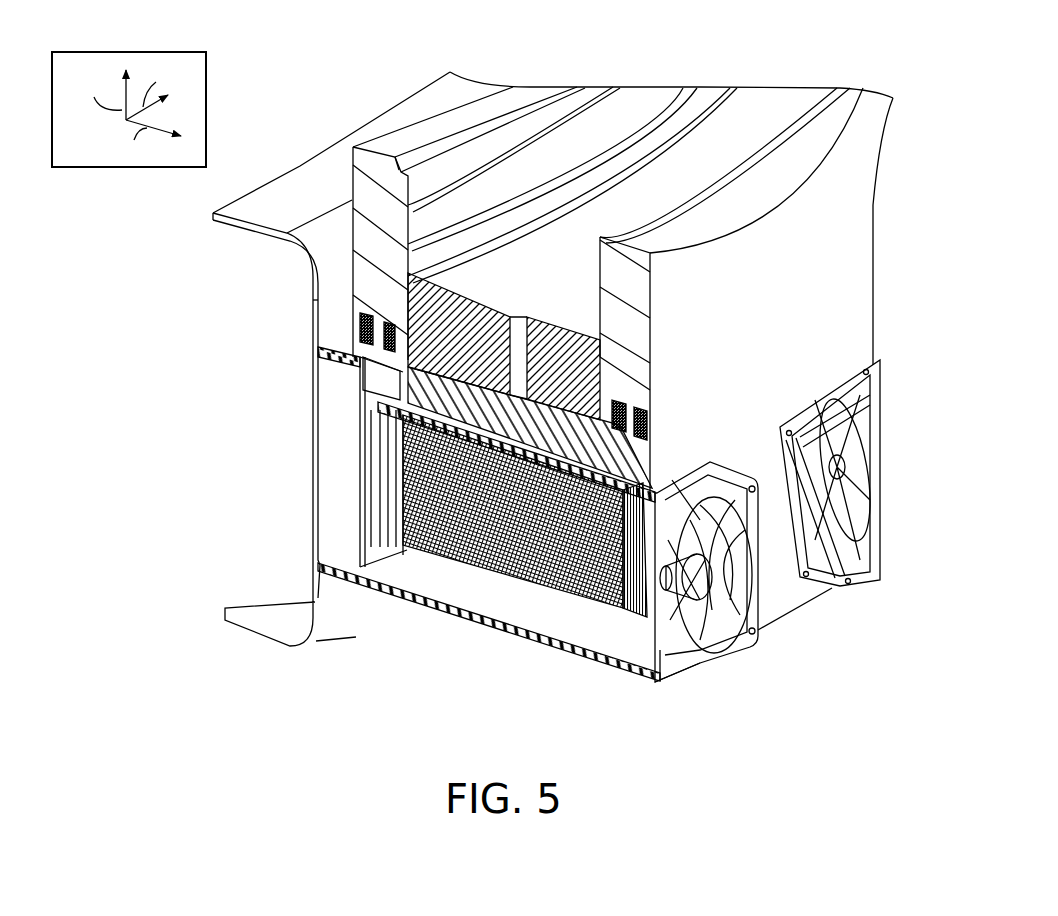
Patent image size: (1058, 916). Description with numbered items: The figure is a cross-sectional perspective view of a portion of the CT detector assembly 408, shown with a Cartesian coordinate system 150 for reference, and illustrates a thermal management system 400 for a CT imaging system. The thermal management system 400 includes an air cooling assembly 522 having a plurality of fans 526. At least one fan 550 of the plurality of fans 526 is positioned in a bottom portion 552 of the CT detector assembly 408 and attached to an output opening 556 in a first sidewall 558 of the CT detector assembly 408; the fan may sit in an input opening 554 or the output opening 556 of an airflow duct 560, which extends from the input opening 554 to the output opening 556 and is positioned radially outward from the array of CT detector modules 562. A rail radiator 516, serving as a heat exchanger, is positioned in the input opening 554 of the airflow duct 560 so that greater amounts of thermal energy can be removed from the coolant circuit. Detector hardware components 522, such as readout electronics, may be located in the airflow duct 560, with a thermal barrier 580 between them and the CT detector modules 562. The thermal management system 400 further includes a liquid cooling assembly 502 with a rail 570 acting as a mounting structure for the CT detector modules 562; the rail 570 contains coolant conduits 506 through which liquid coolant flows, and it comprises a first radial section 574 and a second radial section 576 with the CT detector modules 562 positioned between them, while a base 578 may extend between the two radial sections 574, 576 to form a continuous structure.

The Cartesian coordinate system 150 is at (107, 50).
The thermal management system 400 is at (168, 243).
The CT detector assembly 408 is at (848, 305).
The liquid cooling assembly 502 is at (272, 423).
The coolant conduits 506 is at (358, 332).
The rail radiator 516 is at (330, 487).
The air cooling assembly 522 is at (688, 579).
The plurality of fans 526 is at (735, 664).
The fan 550 is at (764, 632).
The bottom portion 552 is at (594, 628).
The input opening 554 is at (397, 564).
The output opening 556 is at (645, 639).
The first sidewall 558 is at (788, 597).
The airflow duct 560 is at (497, 590).
The CT detector modules 562 is at (487, 250).
The rail 570 is at (340, 160).
The first radial section 574 is at (378, 218).
The second radial section 576 is at (633, 306).
The base 578 is at (357, 355).
The thermal barrier 580 is at (400, 428).